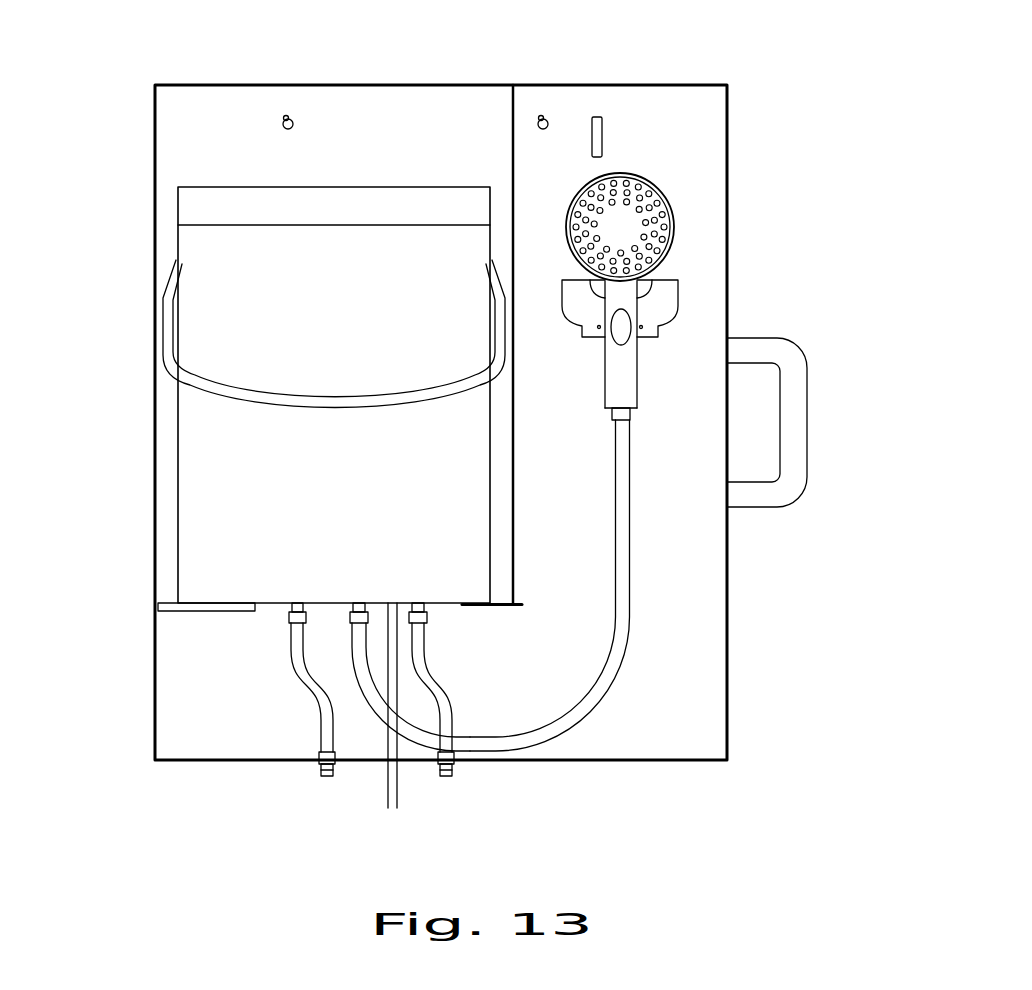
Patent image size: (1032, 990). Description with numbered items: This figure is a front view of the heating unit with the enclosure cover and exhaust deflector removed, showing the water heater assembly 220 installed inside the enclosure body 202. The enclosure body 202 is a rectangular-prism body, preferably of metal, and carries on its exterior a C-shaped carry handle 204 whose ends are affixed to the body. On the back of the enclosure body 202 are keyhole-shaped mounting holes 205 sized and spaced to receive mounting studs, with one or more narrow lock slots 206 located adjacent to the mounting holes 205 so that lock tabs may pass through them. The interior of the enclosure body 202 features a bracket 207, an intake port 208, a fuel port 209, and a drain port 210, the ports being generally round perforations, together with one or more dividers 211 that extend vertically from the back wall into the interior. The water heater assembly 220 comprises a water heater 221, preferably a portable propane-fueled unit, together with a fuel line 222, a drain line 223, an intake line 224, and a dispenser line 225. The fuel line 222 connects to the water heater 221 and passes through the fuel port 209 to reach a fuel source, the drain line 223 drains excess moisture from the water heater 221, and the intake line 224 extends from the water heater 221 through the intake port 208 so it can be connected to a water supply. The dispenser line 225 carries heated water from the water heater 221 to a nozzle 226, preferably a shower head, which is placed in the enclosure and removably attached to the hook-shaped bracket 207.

The enclosure body 202 is at (155, 100).
The carry handle 204 is at (787, 490).
The mounting holes 205 is at (543, 122).
The lock slots 206 is at (595, 120).
The bracket 207 is at (667, 287).
The intake port 208 is at (317, 762).
The fuel port 209 is at (455, 760).
The drain port 210 is at (385, 764).
The dividers 211 is at (197, 608).
The water heater assembly 220 is at (178, 232).
The water heater 221 is at (207, 527).
The fuel line 222 is at (428, 682).
The drain line 223 is at (393, 782).
The intake line 224 is at (317, 717).
The dispenser line 225 is at (620, 625).
The nozzle 226 is at (650, 197).